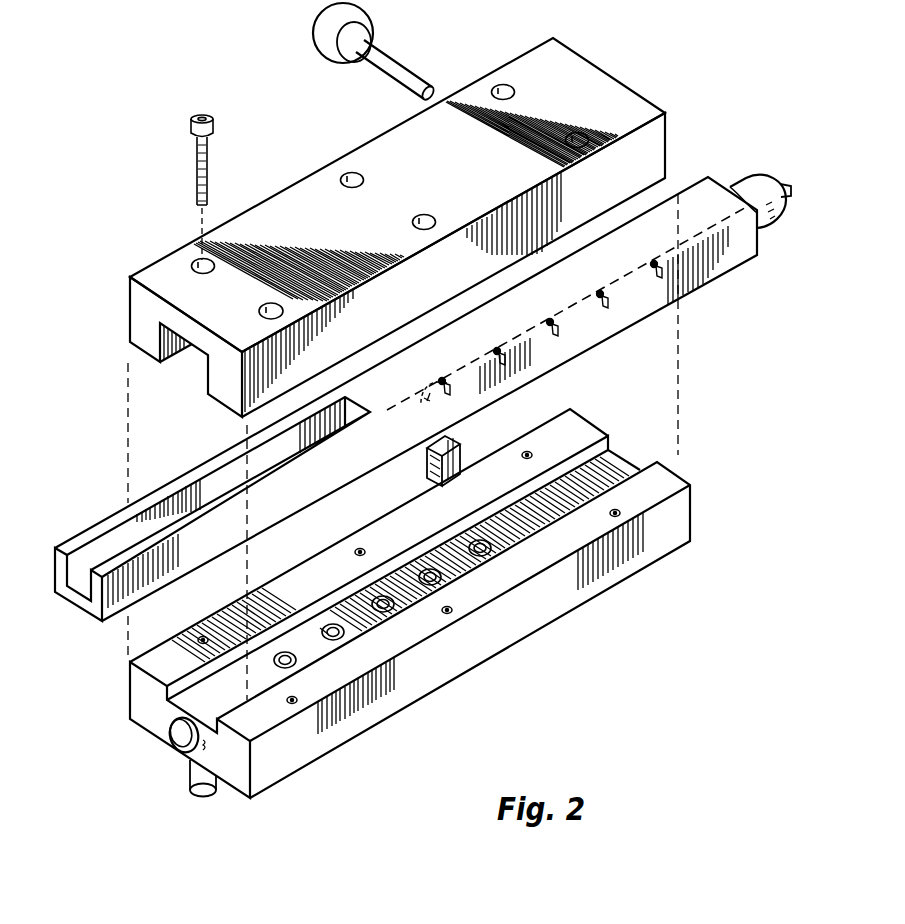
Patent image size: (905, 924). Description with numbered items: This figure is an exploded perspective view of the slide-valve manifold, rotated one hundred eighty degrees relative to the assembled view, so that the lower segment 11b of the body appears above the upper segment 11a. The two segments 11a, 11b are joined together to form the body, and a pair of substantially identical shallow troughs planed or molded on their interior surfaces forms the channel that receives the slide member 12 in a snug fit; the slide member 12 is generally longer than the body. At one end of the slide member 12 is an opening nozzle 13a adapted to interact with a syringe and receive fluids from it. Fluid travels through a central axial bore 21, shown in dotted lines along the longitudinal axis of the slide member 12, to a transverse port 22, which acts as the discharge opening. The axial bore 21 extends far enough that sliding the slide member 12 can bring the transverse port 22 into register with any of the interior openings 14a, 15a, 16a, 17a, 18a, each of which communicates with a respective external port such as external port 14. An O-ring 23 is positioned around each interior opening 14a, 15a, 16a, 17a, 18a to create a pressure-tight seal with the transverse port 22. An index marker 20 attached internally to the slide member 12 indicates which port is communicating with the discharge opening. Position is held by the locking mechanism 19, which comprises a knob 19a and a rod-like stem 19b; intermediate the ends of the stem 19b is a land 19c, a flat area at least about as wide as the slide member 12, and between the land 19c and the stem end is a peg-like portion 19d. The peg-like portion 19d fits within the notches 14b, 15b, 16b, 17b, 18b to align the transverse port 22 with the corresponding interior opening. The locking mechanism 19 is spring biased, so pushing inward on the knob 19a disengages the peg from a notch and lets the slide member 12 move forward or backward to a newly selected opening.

The upper segment 11a is at (692, 518).
The lower segment 11b is at (597, 83).
The slide member 12 is at (209, 564).
The opening nozzle 13a is at (792, 184).
The external port 14 is at (185, 774).
The interior opening 14a is at (290, 668).
The interior opening 15a is at (336, 640).
The interior opening 16a is at (387, 612).
The interior opening 17a is at (436, 584).
The interior opening 18a is at (488, 556).
The notch 14b is at (452, 388).
The notch 15b is at (507, 357).
The notch 16b is at (560, 330).
The notch 17b is at (610, 302).
The notch 18b is at (664, 272).
The locking mechanism 19 is at (345, 73).
The knob 19a is at (313, 28).
The rod-like stem 19b is at (370, 62).
The land 19c is at (422, 98).
The peg-like portion 19d is at (336, 147).
The index marker 20 is at (464, 450).
The central axial bore 21 is at (477, 358).
The transverse port 22 is at (423, 400).
The O-ring 23 is at (324, 630).